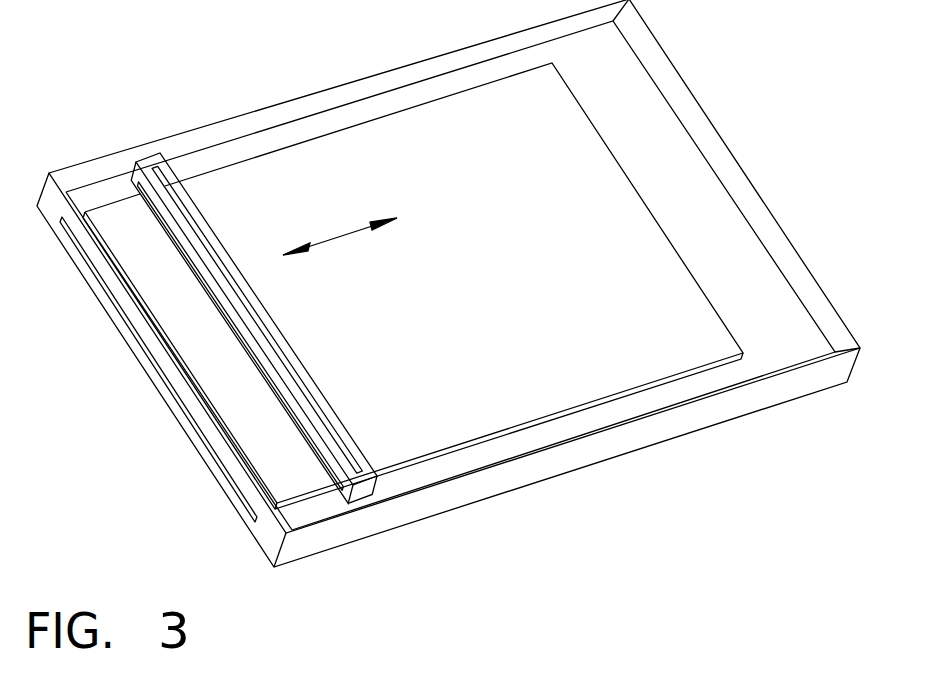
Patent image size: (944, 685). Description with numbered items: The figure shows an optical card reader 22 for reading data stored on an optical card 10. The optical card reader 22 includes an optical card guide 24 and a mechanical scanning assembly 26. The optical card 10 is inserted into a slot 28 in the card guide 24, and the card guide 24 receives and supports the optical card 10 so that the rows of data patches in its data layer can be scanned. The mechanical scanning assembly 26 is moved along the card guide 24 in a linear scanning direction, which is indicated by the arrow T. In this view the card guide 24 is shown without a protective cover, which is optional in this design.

The optical card 10 is at (486, 287).
The optical card reader 22 is at (584, 496).
The optical card guide 24 is at (710, 118).
The mechanical scanning assembly 26 is at (152, 155).
The slot 28 is at (217, 454).
The arrow T is at (338, 238).